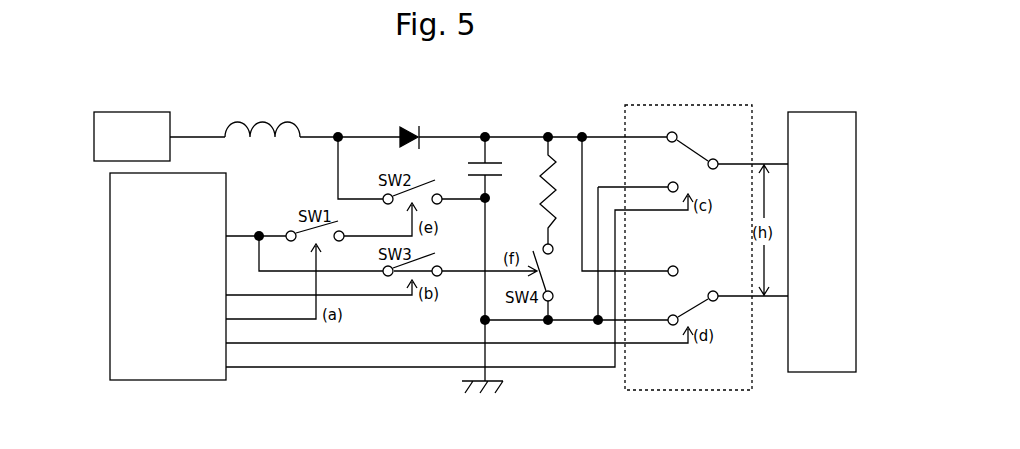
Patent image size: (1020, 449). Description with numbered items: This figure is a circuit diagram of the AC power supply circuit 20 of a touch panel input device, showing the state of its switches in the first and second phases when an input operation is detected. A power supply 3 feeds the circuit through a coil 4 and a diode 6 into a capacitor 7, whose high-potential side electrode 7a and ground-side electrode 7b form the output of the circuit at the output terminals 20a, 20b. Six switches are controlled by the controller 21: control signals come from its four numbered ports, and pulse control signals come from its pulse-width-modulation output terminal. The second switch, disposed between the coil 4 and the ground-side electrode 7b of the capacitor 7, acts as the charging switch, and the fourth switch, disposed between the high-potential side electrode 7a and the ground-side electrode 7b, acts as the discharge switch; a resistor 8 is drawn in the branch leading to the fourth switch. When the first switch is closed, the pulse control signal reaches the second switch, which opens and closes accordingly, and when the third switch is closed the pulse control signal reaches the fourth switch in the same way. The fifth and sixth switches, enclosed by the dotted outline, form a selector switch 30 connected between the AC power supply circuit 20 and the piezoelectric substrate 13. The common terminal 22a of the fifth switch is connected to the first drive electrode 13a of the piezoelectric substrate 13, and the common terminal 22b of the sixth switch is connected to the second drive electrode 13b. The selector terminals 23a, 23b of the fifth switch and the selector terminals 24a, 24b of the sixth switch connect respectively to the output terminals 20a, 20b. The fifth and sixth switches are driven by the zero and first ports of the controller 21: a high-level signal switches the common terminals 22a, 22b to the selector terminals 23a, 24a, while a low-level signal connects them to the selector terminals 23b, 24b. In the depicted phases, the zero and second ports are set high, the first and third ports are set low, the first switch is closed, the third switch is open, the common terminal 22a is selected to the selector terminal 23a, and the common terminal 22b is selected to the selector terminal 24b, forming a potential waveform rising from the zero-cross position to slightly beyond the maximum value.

The power supply 3 is at (167, 114).
The coil 4 is at (272, 123).
The diode 6 is at (406, 124).
The capacitor 7 is at (484, 167).
The high-potential side electrode of the capacitor 7a is at (495, 156).
The ground-side electrode of the capacitor 7b is at (495, 182).
The resistor 8 is at (556, 190).
The piezoelectric substrate 13 is at (822, 242).
The first drive electrode 13a is at (822, 164).
The second drive electrode 13b is at (822, 297).
The AC power supply circuit 20 is at (85, 277).
The first output terminal 20a is at (582, 130).
The second output terminal 20b is at (598, 322).
The controller 21 is at (146, 303).
The common terminal of switch SW5 22a is at (710, 154).
The common terminal of switch SW6 22b is at (712, 308).
The selector terminal of switch SW5 23a is at (658, 129).
The selector terminal of switch SW5 23b is at (669, 179).
The selector terminal of switch SW6 24a is at (669, 262).
The selector terminal of switch SW6 24b is at (669, 312).
The selector switch 30 is at (688, 216).